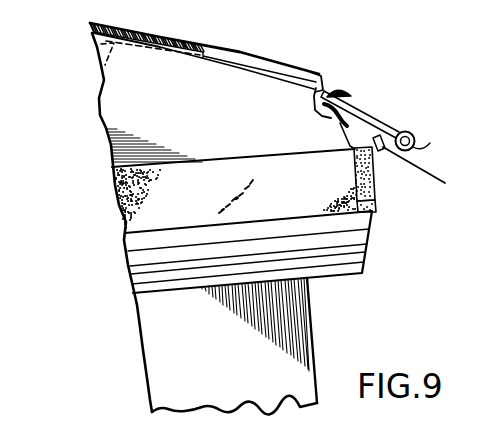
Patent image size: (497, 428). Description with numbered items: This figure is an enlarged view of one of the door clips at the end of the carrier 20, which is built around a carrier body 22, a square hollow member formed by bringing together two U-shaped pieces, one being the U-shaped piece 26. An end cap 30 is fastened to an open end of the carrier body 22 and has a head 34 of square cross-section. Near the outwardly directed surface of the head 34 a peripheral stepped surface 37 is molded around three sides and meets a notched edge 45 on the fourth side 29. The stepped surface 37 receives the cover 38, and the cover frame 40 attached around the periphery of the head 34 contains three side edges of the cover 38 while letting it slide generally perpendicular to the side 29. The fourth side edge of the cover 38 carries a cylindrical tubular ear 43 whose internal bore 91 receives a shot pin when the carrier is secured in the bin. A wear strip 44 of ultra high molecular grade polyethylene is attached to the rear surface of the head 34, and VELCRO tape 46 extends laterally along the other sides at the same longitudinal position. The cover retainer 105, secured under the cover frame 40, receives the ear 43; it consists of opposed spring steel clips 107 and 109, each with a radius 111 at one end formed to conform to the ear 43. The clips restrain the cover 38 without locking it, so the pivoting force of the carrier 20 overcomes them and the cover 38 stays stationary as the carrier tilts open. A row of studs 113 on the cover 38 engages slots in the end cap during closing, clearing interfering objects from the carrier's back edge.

The carrier 20 is at (127, 321).
The carrier body 22 is at (295, 306).
The U-shaped piece 26 is at (214, 388).
The side 29 is at (376, 208).
The end cap 30 is at (121, 219).
The head 34 is at (117, 148).
The peripheral stepped surface 37 is at (99, 72).
The cover 38 is at (379, 112).
The cover frame 40 is at (183, 38).
The ear 43 is at (414, 133).
The wear strip 44 is at (376, 182).
The notched edge 45 is at (338, 138).
The VELCRO tape 46 is at (249, 181).
The internal bore 91 is at (417, 150).
The cover retainer 105 is at (338, 93).
The spring steel clip 107 is at (305, 73).
The spring steel clip 109 is at (312, 84).
The radius 111 is at (322, 122).
The stud 113 is at (436, 175).